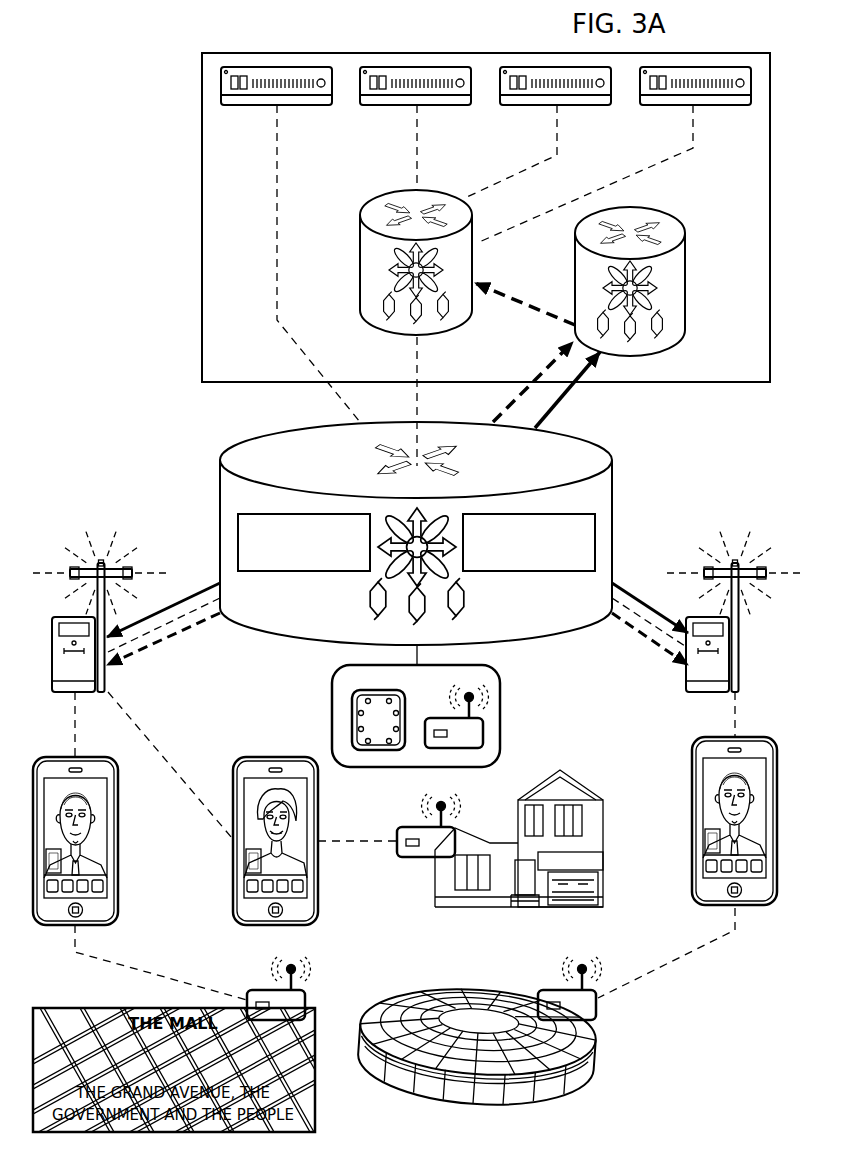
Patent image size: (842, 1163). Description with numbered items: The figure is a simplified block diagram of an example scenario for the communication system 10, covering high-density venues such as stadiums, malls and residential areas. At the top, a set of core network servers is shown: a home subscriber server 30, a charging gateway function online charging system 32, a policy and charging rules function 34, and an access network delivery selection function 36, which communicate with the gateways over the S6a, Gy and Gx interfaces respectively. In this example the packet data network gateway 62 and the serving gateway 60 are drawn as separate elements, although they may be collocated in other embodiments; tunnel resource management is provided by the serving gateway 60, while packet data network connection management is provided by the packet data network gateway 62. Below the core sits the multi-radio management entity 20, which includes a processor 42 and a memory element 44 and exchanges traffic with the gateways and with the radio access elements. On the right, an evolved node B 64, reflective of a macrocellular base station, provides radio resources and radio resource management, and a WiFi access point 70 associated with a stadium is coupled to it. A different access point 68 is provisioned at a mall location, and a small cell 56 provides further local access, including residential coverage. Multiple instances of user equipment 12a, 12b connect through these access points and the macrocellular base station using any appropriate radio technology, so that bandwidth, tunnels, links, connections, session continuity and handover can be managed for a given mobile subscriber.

The communication system 10 is at (152, 60).
The user equipment 12a is at (233, 878).
The user equipment 12b is at (60, 925).
The multi-radio management entity 20 is at (218, 512).
The home subscriber server 30 is at (258, 105).
The charging gateway function online charging system 32 is at (400, 105).
The policy and charging rules function 34 is at (583, 105).
The access network delivery selection function 36 is at (722, 105).
The processor 42 is at (285, 572).
The memory element 44 is at (548, 572).
The small cell 56 is at (500, 715).
The serving gateway 60 is at (685, 290).
The packet data network gateway 62 is at (360, 264).
The evolved node B 64 is at (735, 562).
The access point 68 is at (305, 1000).
The WiFi access point 70 is at (595, 1010).